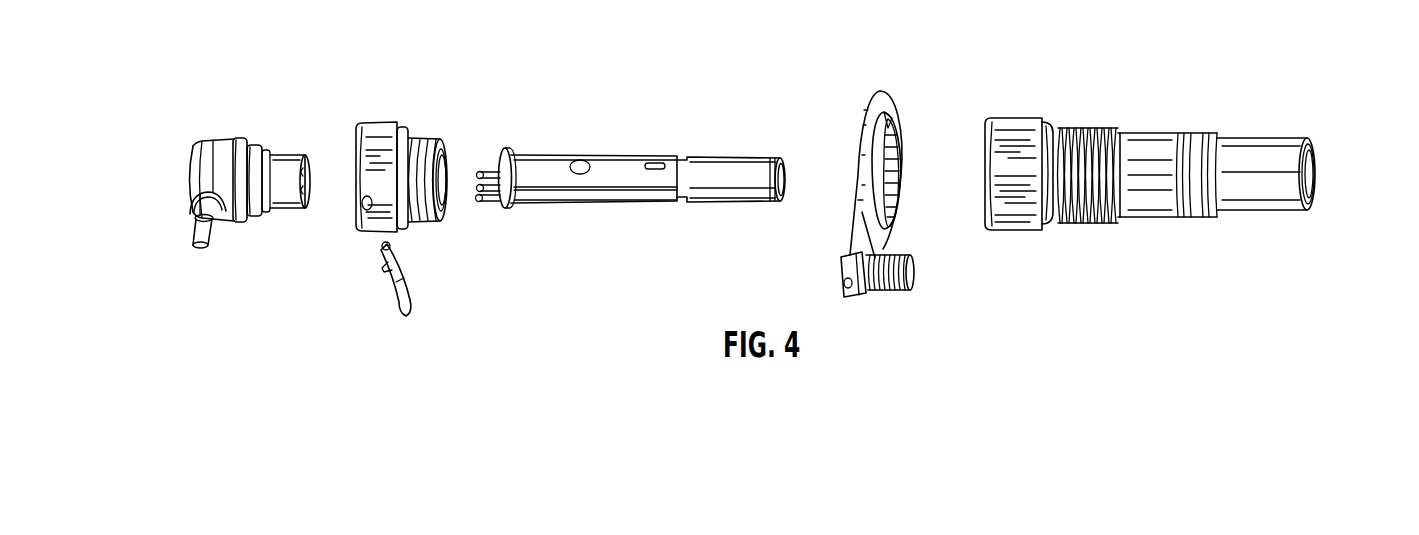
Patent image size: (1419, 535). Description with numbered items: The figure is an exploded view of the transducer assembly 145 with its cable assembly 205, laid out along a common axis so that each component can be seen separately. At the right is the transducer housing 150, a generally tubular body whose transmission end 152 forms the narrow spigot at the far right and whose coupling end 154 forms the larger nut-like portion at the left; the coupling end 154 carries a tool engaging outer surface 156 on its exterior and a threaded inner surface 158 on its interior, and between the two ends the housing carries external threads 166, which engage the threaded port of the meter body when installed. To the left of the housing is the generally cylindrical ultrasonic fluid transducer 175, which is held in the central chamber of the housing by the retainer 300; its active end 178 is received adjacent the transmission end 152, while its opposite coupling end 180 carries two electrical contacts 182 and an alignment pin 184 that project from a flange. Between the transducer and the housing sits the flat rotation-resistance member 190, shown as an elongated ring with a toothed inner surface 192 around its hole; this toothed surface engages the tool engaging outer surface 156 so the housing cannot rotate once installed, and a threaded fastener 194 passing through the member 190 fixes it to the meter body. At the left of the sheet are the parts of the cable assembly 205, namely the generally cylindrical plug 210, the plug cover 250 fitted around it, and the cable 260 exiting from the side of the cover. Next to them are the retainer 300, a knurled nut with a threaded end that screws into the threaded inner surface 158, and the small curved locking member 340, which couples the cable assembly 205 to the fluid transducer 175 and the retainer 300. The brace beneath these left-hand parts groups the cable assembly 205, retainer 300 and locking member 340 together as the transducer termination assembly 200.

The transducer assembly 145 is at (752, 214).
The transducer housing 150 is at (1167, 144).
The transmission end 152 is at (1305, 174).
The coupling end 154 is at (1011, 145).
The tool engaging outer surface 156 is at (1050, 139).
The threaded inner surface 158 is at (1150, 143).
The external threads 166 is at (1095, 141).
The ultrasonic fluid transducer 175 is at (679, 151).
The active end 178 is at (811, 181).
The coupling end 180 is at (504, 183).
The electrical contacts 182 is at (475, 140).
The alignment pin 184 is at (478, 226).
The rotation-resistance member 190 is at (906, 201).
The toothed inner surface 192 is at (928, 169).
The threaded fastener 194 is at (899, 288).
The transducer termination assembly 200 is at (282, 245).
The cable assembly 205 is at (151, 317).
The plug 210 is at (297, 150).
The plug cover 250 is at (221, 179).
The cable 260 is at (172, 229).
The retainer 300 is at (366, 192).
The locking member 340 is at (366, 289).